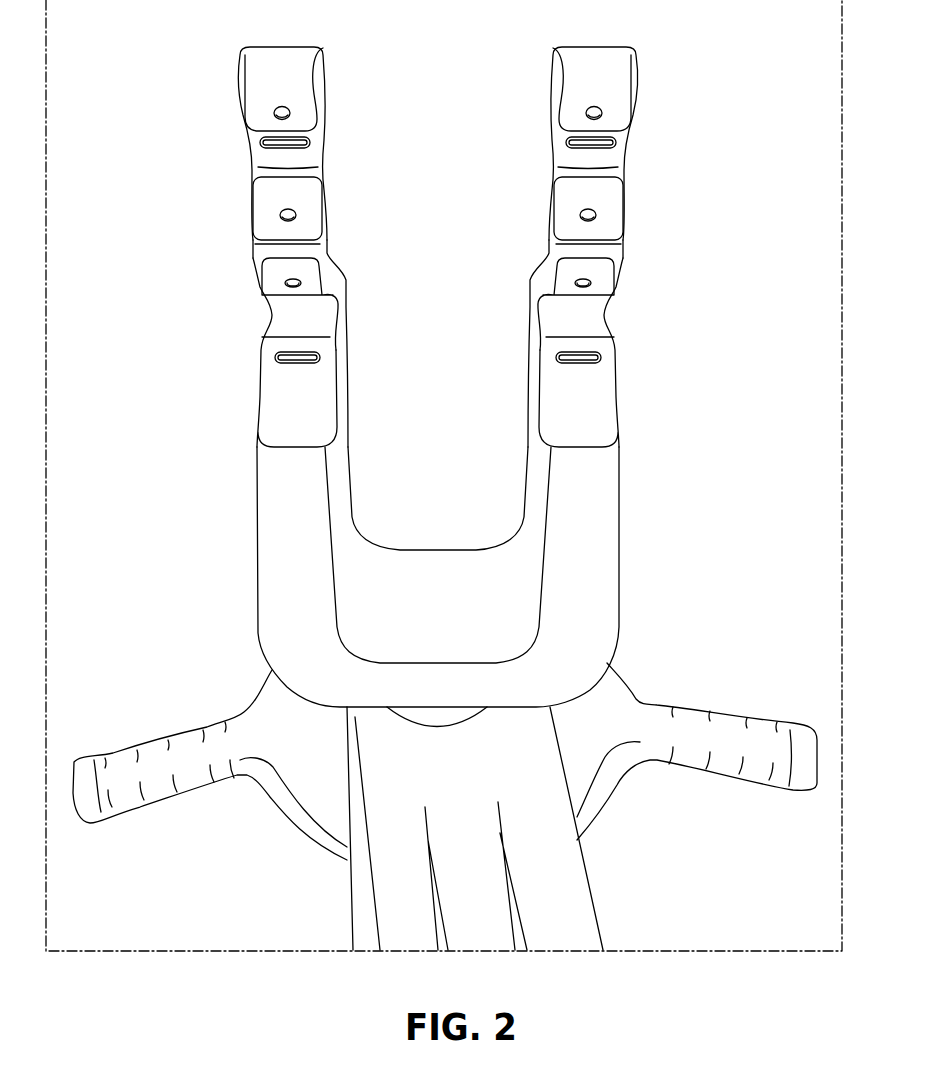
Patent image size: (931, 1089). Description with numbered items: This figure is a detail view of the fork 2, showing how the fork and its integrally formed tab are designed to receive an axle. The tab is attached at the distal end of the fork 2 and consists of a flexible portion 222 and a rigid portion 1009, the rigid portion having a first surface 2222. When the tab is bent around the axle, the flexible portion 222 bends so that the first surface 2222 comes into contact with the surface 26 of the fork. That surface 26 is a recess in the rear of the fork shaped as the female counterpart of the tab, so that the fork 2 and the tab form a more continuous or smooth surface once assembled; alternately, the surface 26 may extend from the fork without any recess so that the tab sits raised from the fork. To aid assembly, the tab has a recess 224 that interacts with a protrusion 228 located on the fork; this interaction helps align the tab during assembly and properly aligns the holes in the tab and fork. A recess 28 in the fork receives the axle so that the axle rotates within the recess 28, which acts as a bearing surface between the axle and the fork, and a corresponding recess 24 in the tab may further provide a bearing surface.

The fork 2 is at (277, 480).
The recess 24 is at (305, 158).
The surface 26 is at (287, 383).
The recess 28 is at (280, 308).
The flexible portion 222 is at (612, 253).
The recess 224 is at (275, 143).
The protrusion 228 is at (305, 355).
The rigid portion 1009 is at (625, 200).
The first surface 2222 is at (257, 94).